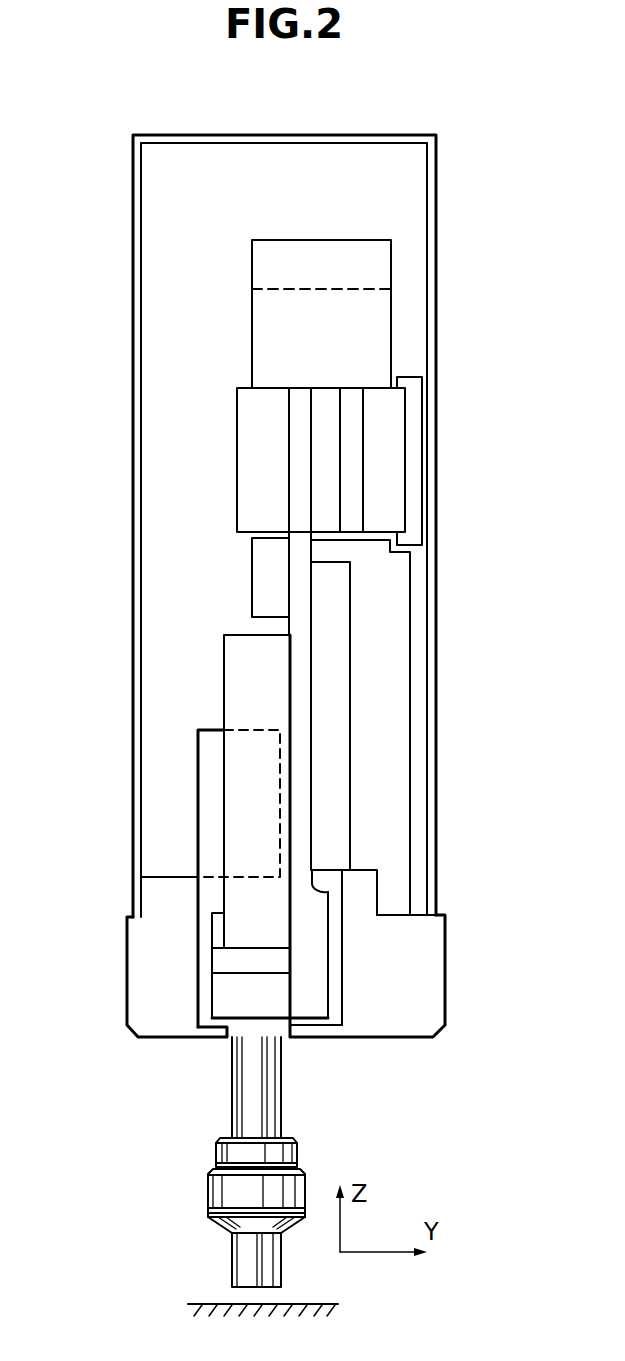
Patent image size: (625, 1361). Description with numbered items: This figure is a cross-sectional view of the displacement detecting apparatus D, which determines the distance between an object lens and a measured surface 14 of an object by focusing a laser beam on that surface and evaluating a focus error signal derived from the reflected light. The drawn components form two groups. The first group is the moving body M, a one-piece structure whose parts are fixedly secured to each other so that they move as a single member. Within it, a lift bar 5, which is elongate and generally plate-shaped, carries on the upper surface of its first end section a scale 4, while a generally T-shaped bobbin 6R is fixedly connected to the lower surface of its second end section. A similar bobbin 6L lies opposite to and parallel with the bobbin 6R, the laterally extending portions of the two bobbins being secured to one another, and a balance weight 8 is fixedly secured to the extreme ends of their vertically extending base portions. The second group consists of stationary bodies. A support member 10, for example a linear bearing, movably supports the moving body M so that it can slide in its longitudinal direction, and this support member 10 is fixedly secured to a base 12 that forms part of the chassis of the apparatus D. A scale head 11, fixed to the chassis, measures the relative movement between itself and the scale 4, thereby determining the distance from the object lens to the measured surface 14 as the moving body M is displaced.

The displacement detecting apparatus D is at (452, 154).
The balance weight 8 is at (413, 417).
The bobbin 6L is at (394, 503).
The bobbin 6R is at (353, 520).
The base 12 is at (393, 725).
The support member 10 is at (343, 827).
The moving body M is at (210, 672).
The scale head 11 is at (205, 815).
The scale 4 is at (238, 902).
The lift bar 5 is at (318, 990).
The measured surface 14 is at (208, 1314).